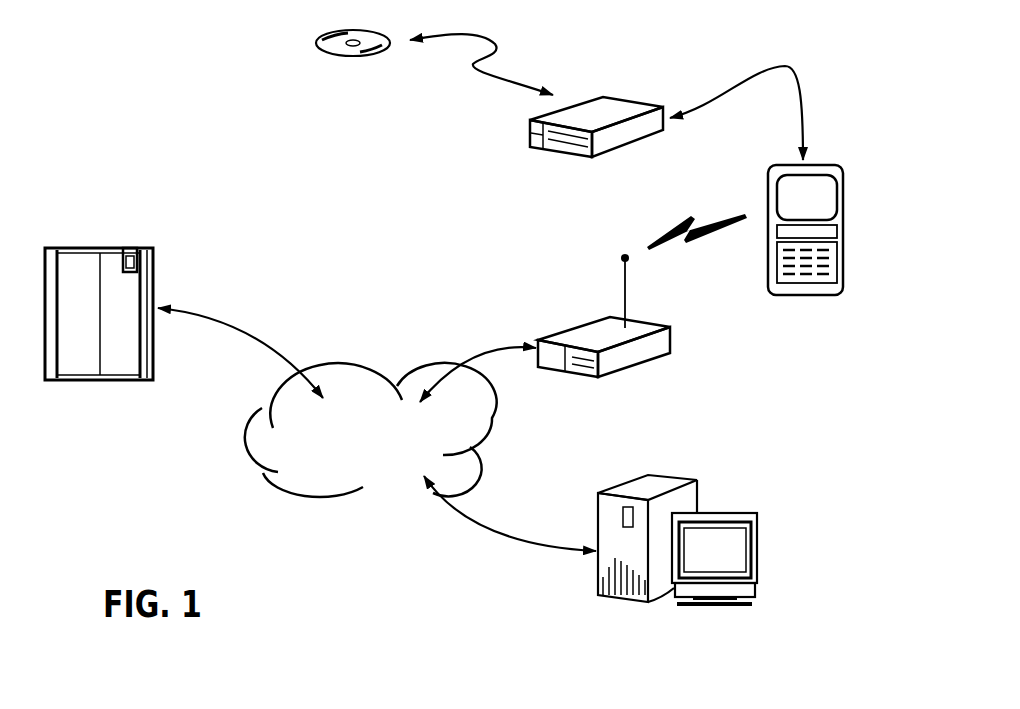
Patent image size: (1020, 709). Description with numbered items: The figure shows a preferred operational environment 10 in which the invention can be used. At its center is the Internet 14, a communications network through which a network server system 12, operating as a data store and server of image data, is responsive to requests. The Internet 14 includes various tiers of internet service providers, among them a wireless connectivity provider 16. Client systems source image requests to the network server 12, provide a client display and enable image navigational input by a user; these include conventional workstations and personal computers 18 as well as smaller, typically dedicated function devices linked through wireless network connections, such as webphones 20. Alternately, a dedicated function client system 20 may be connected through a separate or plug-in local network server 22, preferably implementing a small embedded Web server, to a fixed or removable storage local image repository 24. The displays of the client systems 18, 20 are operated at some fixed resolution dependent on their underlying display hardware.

The operational environment 10 is at (377, 572).
The network server system 12 is at (153, 262).
The Internet 14 is at (335, 481).
The wireless connectivity provider 16 is at (650, 362).
The personal computer 18 is at (708, 606).
The webphone 20 is at (808, 296).
The local network server 22 is at (633, 102).
The local image repository 24 is at (388, 52).